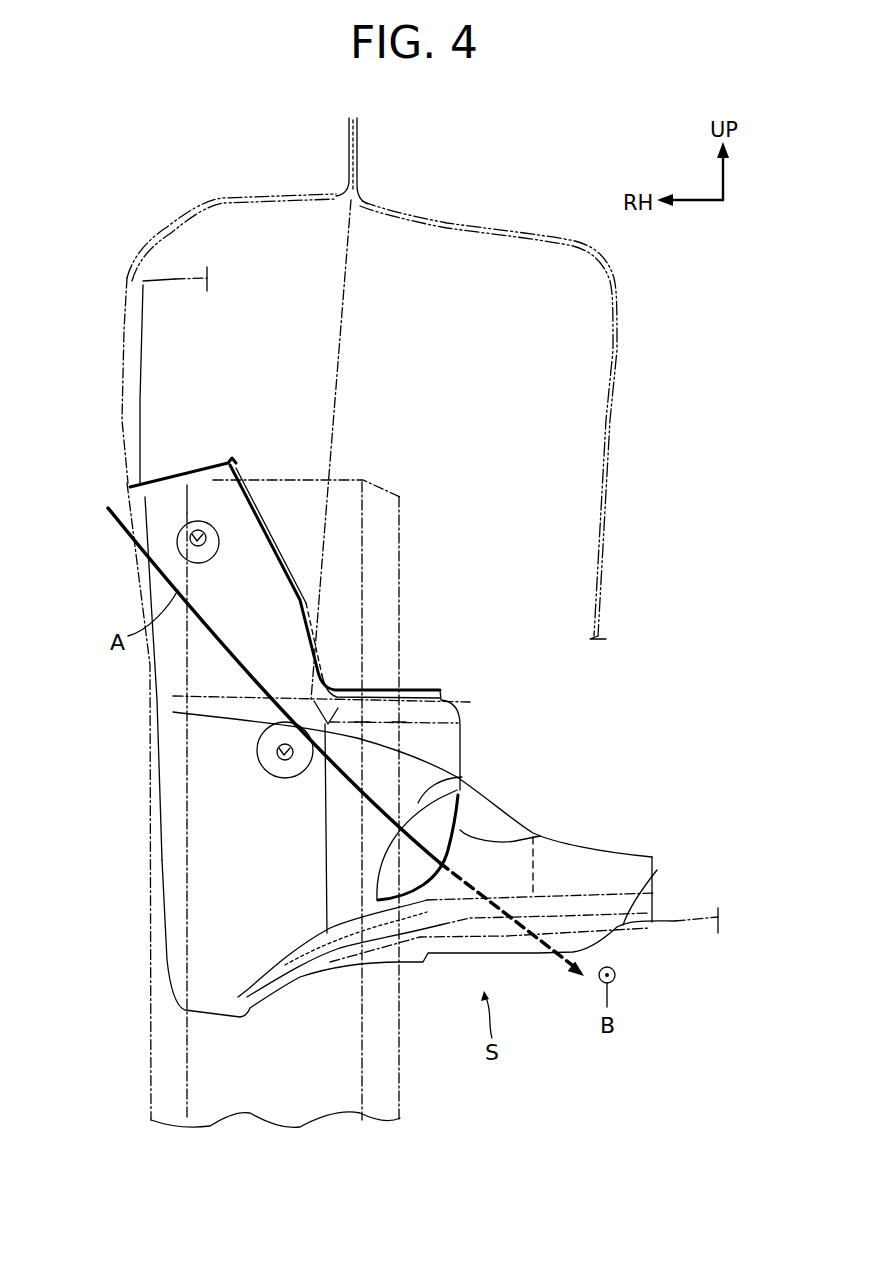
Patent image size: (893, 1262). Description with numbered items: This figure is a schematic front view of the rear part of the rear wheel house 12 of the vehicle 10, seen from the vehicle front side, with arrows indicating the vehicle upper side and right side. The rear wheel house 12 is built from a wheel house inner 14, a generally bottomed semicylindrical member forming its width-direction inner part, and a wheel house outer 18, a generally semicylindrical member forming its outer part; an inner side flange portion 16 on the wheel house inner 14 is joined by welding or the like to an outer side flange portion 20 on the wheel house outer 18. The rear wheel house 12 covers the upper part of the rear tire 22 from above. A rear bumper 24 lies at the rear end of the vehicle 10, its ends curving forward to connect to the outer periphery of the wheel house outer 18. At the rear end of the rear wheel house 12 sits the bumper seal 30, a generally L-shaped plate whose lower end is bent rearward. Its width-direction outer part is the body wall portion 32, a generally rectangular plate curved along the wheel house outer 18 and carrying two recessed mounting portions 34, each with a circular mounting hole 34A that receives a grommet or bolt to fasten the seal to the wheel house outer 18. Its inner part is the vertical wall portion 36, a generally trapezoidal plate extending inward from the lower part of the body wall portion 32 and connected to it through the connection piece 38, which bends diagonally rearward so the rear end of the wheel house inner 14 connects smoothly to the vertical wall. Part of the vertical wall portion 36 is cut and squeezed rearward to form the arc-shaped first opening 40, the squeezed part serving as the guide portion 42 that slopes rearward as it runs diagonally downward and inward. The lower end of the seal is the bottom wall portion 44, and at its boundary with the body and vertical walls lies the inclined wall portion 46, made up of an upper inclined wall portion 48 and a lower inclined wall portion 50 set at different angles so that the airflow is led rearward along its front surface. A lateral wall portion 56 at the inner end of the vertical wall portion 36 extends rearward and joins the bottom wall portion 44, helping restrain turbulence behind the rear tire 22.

The vehicle 10 is at (682, 356).
The rear wheel house 12 is at (372, 383).
The wheel house inner 14 is at (488, 402).
The inner side flange portion 16 is at (358, 130).
The wheel house outer 18 is at (217, 197).
The outer side flange portion 20 is at (345, 122).
The rear tire 22 is at (150, 1017).
The rear bumper 24 is at (140, 325).
The bumper seal 30 is at (449, 688).
The body wall portion 32 is at (170, 668).
The mounting portion 34 is at (212, 553).
The mounting hole 34A is at (201, 533).
The vertical wall portion 36 is at (458, 777).
The connection piece 38 is at (450, 738).
The first opening 40 is at (557, 824).
The guide portion 42 is at (467, 793).
The bottom wall portion 44 is at (427, 963).
The inclined wall portion 46 is at (725, 803).
The upper inclined wall portion 48 is at (619, 900).
The lower inclined wall portion 50 is at (657, 870).
The lateral wall portion 56 is at (652, 905).